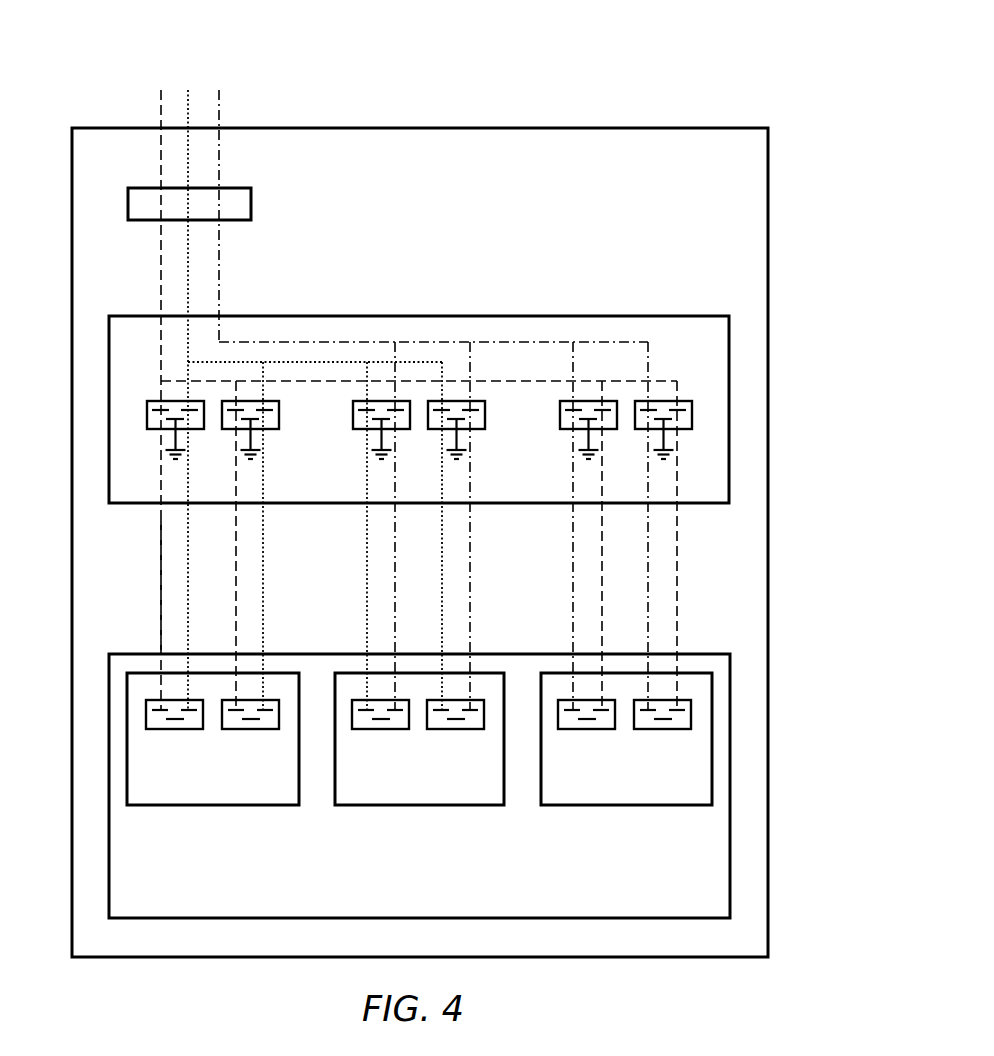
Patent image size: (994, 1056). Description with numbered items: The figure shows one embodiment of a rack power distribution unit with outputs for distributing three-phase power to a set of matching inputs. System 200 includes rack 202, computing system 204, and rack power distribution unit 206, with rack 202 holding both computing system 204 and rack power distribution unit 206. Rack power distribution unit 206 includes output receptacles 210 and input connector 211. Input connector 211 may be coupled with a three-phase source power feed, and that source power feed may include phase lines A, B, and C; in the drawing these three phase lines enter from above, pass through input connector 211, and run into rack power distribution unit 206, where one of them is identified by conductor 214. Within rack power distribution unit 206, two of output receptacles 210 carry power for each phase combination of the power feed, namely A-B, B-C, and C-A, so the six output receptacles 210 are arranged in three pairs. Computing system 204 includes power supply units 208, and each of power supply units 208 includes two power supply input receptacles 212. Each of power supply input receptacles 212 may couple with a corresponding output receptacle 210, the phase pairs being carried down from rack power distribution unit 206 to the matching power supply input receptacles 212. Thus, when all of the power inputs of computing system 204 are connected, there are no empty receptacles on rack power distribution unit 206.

The system 200 is at (622, 89).
The rack 202 is at (758, 158).
The computing system 204 is at (720, 908).
The rack power distribution unit 206 is at (720, 348).
The power supply units 208 is at (290, 796).
The output receptacles 210 is at (154, 401).
The input connector 211 is at (251, 200).
The power supply input receptacles 212 is at (178, 730).
The phase A conductor 214 is at (160, 612).